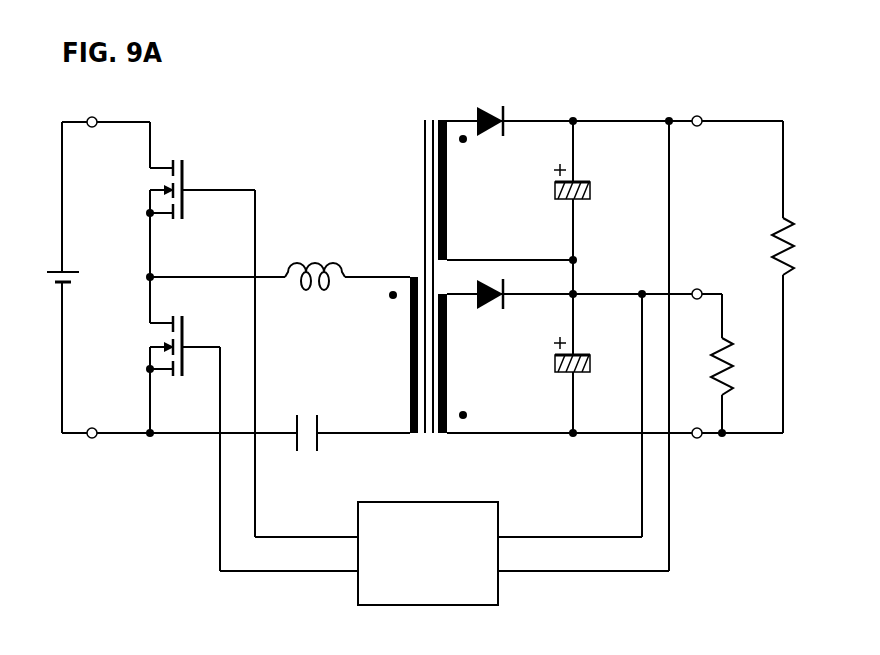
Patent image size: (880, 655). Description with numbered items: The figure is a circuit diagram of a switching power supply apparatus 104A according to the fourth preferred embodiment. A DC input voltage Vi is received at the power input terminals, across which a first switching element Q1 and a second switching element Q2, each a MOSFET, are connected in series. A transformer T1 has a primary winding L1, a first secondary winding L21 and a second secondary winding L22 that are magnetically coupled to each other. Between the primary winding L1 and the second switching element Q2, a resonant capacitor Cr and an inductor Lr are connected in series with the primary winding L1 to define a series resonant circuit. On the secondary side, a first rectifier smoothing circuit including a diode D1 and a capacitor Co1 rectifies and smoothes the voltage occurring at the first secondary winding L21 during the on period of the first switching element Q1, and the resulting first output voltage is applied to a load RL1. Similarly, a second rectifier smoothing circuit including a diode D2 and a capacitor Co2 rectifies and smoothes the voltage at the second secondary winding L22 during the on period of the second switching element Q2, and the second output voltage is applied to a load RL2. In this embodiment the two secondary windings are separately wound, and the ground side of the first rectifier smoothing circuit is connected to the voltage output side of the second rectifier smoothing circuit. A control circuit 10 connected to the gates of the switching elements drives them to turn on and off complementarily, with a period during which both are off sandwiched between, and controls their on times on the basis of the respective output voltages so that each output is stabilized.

The control circuit 10 is at (498, 502).
The switching power supply apparatus 104A is at (820, 44).
The first switching element Q1 is at (150, 189).
The second switching element Q2 is at (150, 346).
The transformer T1 is at (433, 251).
The primary winding L1 is at (398, 355).
The first secondary winding L21 is at (463, 190).
The second secondary winding L22 is at (463, 363).
The inductor Lr is at (315, 263).
The resonant capacitor Cr is at (307, 420).
The diode D1 is at (490, 109).
The diode D2 is at (490, 306).
The capacitor Co1 is at (590, 184).
The capacitor Co2 is at (590, 356).
The load RL1 is at (801, 246).
The load RL2 is at (740, 366).
The DC input voltage Vi is at (50, 276).